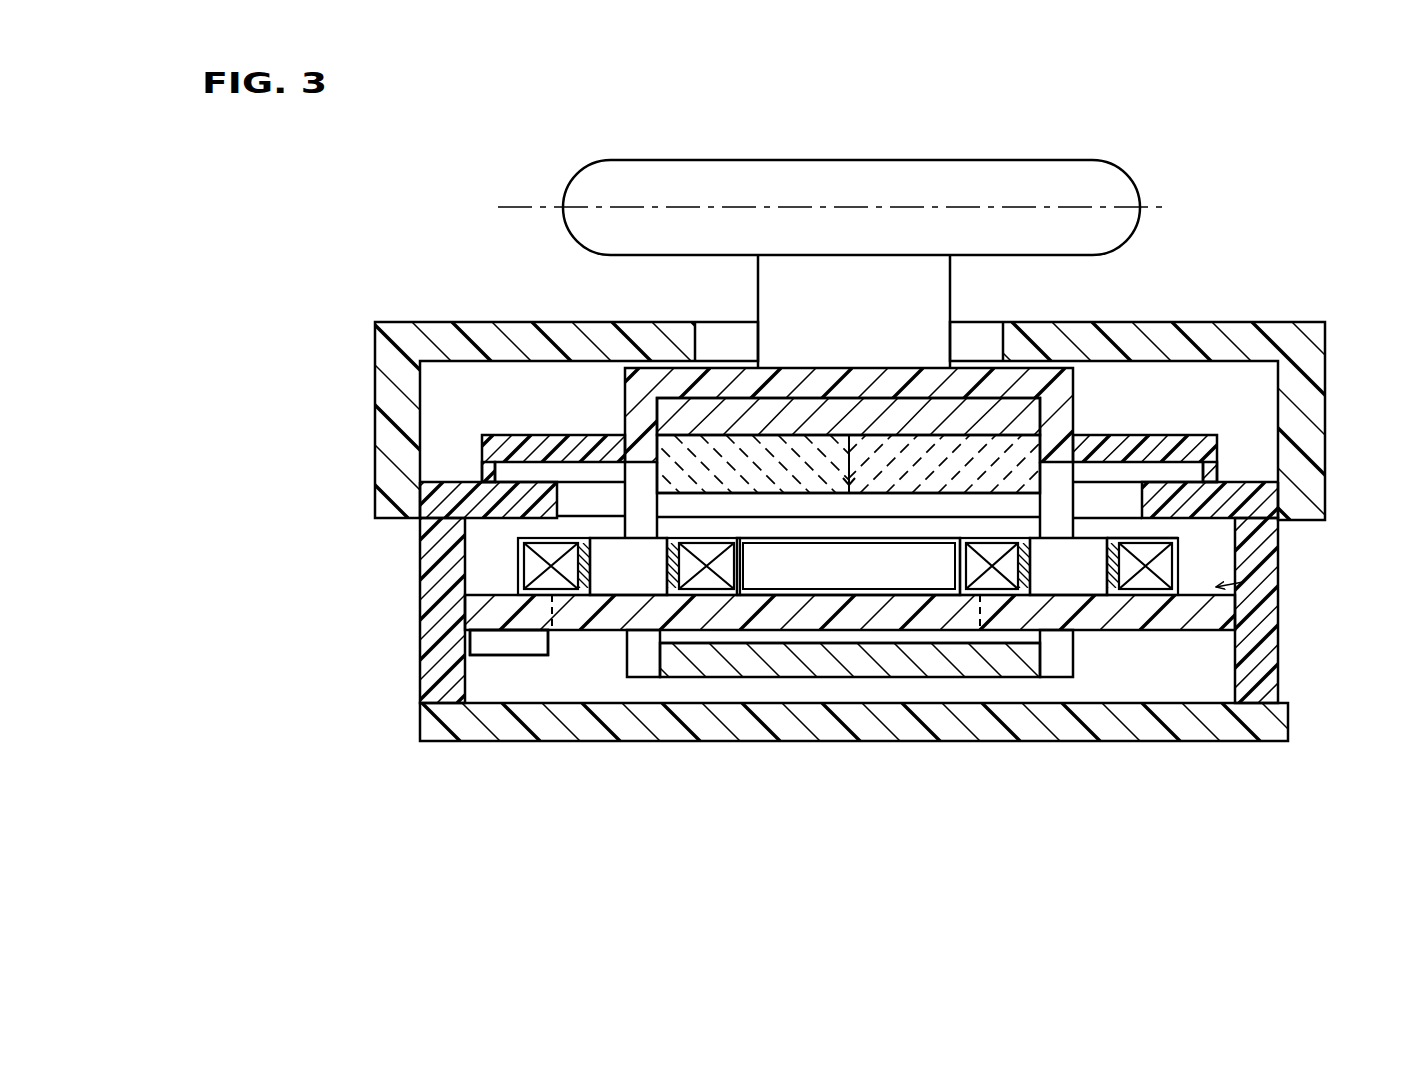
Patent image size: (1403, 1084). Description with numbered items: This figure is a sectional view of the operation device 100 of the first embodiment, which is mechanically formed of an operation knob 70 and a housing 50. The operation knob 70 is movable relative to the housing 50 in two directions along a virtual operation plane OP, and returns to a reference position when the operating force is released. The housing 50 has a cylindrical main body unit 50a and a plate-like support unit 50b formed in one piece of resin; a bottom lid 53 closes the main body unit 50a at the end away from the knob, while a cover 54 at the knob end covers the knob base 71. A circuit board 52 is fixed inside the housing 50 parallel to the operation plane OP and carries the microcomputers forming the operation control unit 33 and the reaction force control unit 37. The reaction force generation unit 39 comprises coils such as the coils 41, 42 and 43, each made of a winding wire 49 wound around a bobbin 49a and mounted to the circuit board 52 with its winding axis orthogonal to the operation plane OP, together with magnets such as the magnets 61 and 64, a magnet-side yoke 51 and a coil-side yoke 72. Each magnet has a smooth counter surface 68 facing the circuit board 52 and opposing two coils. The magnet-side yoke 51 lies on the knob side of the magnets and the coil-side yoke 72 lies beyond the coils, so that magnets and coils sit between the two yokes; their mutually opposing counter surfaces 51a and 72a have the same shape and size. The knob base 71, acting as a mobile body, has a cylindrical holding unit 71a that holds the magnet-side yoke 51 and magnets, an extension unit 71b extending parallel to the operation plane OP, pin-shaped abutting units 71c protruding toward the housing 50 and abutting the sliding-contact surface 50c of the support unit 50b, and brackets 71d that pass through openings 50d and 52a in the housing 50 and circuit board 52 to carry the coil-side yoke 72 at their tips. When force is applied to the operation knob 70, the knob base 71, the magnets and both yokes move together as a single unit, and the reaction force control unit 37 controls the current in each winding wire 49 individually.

The operation device 100 is at (798, 452).
The operation knob 70 is at (950, 160).
The operation plane OP is at (513, 207).
The counter surface 68 is at (862, 302).
The magnet 64 is at (707, 445).
The magnet 61 is at (1022, 405).
The magnet-side yoke 51 is at (1028, 410).
The counter surface 51a is at (968, 435).
The knob base 71 is at (652, 375).
The holding unit 71a is at (622, 435).
The extension unit 71b is at (495, 472).
The abutting unit 71c is at (478, 478).
The bracket 71d is at (637, 497).
The cover 54 is at (392, 362).
The housing 50 is at (798, 486).
The main body unit 50a is at (432, 563).
The support unit 50b is at (505, 507).
The sliding-contact surface 50c is at (435, 488).
The opening 50d is at (1140, 503).
The circuit board 52 is at (475, 615).
The opening 52a is at (705, 610).
The operation control unit 33 is at (490, 652).
The reaction force control unit 37 is at (490, 652).
The bottom lid 53 is at (430, 730).
The coil 43 is at (620, 590).
The coil 42 is at (860, 590).
The coil 41 is at (1095, 590).
The winding wire 49 is at (1170, 592).
The bobbin 49a is at (1175, 533).
The reaction force generation unit 39 is at (1265, 575).
The coil-side yoke 72 is at (790, 662).
The counter surface 72a is at (897, 640).